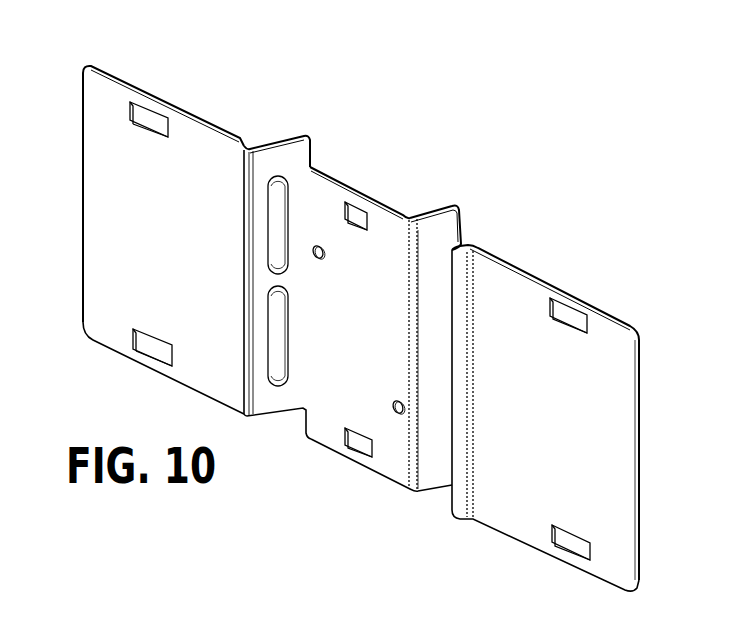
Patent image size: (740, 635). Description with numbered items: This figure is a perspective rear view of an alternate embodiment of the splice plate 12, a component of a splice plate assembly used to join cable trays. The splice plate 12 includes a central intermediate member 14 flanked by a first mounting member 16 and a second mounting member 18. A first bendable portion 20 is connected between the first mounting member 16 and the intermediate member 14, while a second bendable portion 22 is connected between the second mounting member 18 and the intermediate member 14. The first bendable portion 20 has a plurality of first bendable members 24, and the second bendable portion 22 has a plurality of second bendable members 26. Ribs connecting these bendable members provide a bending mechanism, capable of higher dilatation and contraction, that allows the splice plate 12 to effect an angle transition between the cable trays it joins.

The splice plate 12 is at (380, 153).
The intermediate member 14 is at (383, 455).
The first mounting member 16 is at (608, 445).
The second mounting member 18 is at (106, 218).
The first bendable portion 20 is at (470, 204).
The second bendable portion 22 is at (292, 130).
The first bendable members 24 is at (435, 480).
The second bendable members 26 is at (268, 403).